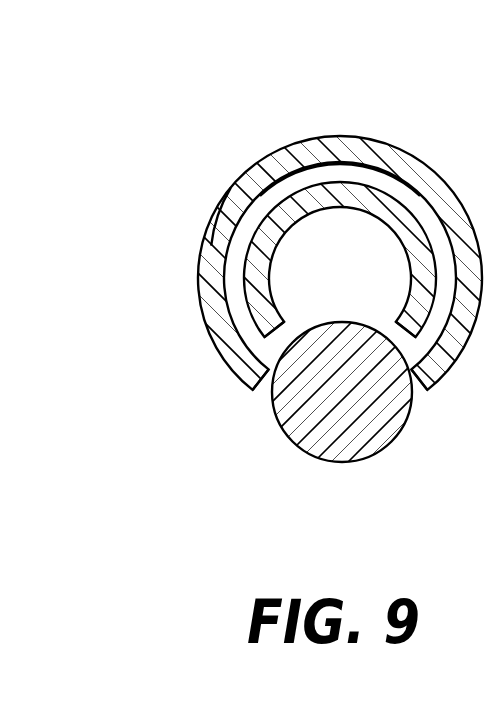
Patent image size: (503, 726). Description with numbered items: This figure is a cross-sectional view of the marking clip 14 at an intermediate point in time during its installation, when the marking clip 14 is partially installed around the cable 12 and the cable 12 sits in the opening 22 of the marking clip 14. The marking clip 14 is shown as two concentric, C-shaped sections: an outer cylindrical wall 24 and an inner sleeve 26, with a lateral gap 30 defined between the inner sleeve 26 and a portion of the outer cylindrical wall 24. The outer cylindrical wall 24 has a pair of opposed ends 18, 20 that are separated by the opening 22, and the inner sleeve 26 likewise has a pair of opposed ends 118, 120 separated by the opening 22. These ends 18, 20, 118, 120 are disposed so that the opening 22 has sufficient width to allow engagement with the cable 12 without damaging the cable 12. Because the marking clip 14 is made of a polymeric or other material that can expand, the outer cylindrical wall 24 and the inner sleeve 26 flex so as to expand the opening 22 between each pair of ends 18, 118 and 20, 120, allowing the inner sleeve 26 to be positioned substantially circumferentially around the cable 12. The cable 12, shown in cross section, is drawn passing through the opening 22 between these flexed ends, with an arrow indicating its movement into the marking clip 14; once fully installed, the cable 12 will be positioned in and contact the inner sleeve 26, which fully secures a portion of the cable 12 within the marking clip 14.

The marking clip 14 is at (285, 151).
The outer cylindrical wall 24 is at (213, 247).
The lateral gap 30 is at (342, 170).
The inner sleeve 26 is at (398, 217).
The end of outer cylindrical wall 18 is at (223, 358).
The end of outer cylindrical wall 20 is at (455, 366).
The end of inner sleeve 118 is at (276, 324).
The end of inner sleeve 120 is at (393, 322).
The cable 12 is at (394, 430).
The opening 22 is at (264, 408).